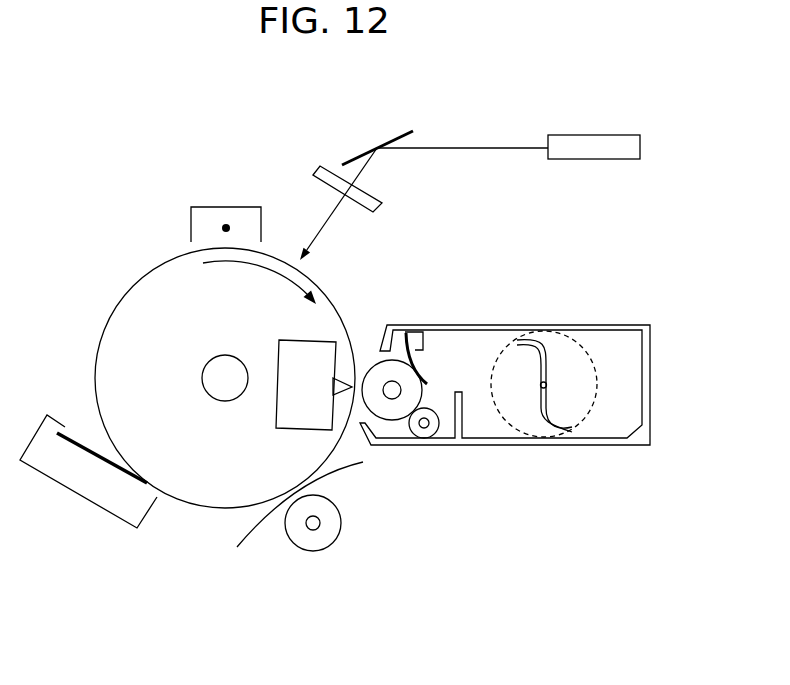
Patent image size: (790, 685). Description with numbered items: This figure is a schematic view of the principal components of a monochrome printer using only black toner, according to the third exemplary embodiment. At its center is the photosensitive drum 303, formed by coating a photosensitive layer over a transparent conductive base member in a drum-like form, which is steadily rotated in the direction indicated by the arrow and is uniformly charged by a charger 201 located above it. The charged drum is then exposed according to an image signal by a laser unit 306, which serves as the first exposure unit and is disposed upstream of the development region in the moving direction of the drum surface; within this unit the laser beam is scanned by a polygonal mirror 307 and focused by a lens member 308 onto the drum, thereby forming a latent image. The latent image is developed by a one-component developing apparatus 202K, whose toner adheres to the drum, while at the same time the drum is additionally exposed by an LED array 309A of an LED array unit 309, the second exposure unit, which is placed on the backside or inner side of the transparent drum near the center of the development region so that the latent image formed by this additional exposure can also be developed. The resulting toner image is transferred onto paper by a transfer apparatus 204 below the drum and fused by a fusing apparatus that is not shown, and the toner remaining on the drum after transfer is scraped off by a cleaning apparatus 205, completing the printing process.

The charger 201 is at (212, 212).
The one-component developing apparatus 202K is at (612, 430).
The transfer apparatus 204 is at (332, 533).
The cleaning apparatus 205 is at (93, 493).
The photosensitive drum 303 is at (198, 493).
The laser unit 306 is at (583, 143).
The polygonal mirror 307 is at (400, 137).
The lens member 308 is at (330, 173).
The LED array unit 309 is at (315, 357).
The LED array 309A is at (340, 378).